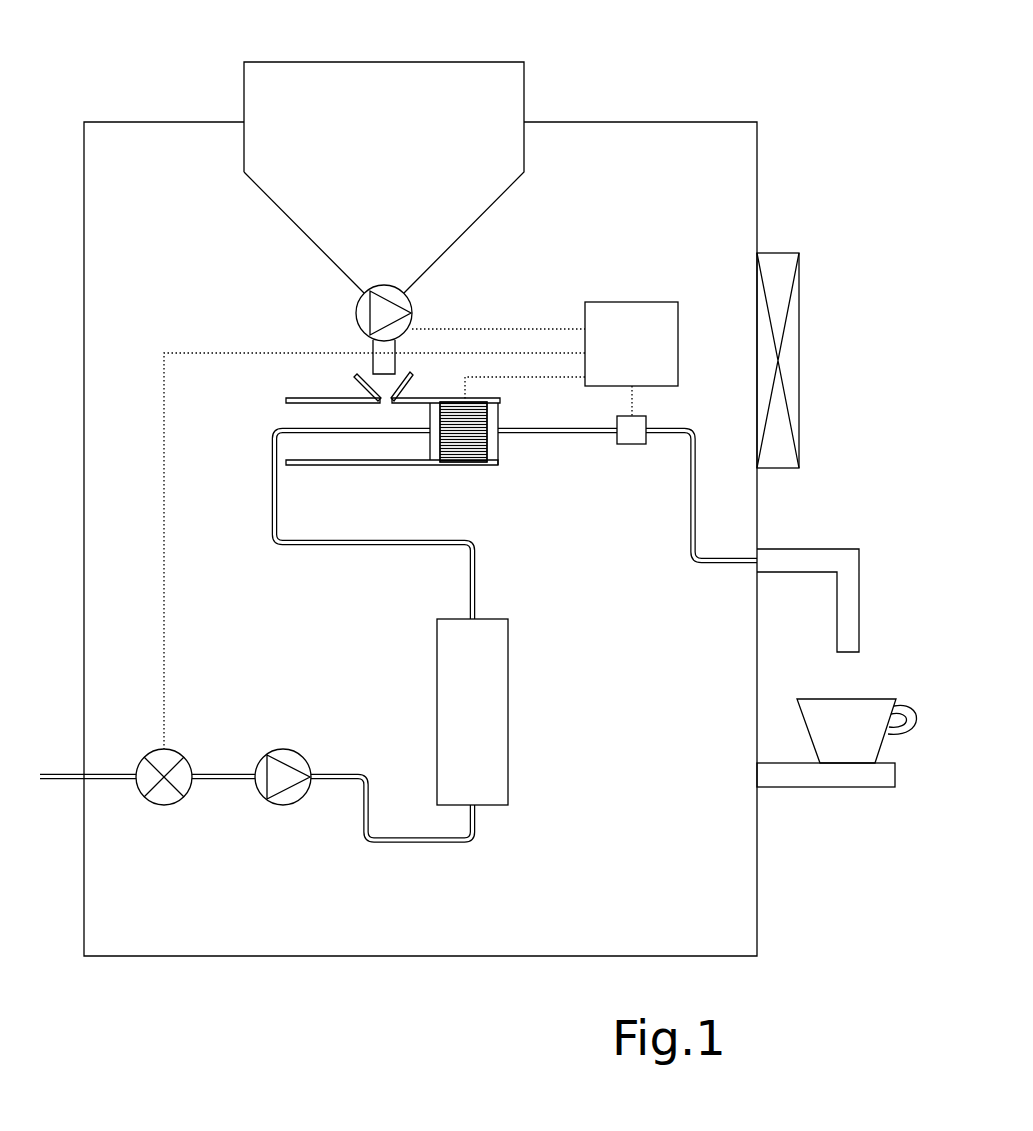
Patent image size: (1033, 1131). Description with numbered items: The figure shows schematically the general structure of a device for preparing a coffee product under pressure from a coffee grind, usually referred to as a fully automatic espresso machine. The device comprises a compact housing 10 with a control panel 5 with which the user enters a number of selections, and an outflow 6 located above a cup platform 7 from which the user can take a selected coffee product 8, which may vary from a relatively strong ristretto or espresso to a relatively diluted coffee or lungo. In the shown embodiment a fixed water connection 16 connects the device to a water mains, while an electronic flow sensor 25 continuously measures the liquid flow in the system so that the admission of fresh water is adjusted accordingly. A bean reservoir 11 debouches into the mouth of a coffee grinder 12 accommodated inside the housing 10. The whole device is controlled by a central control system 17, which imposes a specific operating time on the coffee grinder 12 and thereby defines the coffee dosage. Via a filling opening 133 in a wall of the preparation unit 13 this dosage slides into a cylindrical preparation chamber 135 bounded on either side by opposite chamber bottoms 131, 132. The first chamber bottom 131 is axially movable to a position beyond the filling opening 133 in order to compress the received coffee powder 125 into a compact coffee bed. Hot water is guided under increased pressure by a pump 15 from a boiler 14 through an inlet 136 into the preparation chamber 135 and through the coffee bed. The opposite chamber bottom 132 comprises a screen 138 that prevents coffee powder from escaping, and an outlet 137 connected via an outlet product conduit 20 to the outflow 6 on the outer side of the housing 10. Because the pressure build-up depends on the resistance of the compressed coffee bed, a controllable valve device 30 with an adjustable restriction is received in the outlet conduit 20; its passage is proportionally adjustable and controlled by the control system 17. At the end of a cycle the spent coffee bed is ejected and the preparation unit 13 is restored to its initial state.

The housing 10 is at (745, 183).
The bean reservoir 11 is at (322, 85).
The coffee grinder 12 is at (363, 318).
The preparation unit 13 is at (326, 398).
The first chamber bottom 131 is at (433, 445).
The opposite chamber bottom 132 is at (488, 455).
The filling opening 133 is at (408, 388).
The preparation chamber 135 is at (386, 465).
The inlet 136 is at (296, 430).
The outlet 137 is at (508, 431).
The screen 138 is at (463, 432).
The coffee powder 125 is at (490, 400).
The boiler 14 is at (455, 713).
The pump 15 is at (284, 764).
The fixed water connection 16 is at (48, 776).
The central control system 17 is at (650, 314).
The outlet product conduit 20 is at (556, 431).
The electronic flow sensor 25 is at (176, 790).
The controllable valve device 30 is at (648, 420).
The control panel 5 is at (780, 358).
The outflow 6 is at (853, 610).
The cup platform 7 is at (820, 776).
The coffee product 8 is at (884, 720).